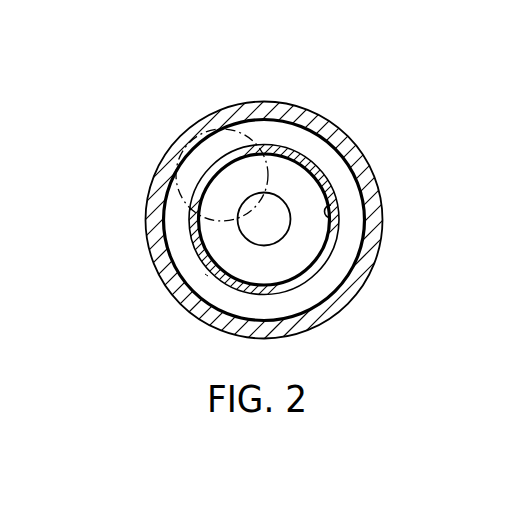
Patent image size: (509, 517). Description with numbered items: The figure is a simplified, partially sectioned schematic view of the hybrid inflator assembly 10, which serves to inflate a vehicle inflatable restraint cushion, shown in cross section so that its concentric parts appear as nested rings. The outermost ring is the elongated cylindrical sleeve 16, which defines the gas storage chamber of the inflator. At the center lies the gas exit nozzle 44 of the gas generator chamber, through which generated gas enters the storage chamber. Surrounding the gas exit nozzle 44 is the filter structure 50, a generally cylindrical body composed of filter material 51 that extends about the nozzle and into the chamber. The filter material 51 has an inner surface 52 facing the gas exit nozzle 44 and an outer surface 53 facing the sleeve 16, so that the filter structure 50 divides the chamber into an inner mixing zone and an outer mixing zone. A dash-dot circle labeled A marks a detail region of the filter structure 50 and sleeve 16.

The hybrid inflator assembly 10 is at (416, 136).
The elongated cylindrical sleeve 16 is at (313, 112).
The gas exit nozzle 44 is at (292, 233).
The filter structure 50 is at (206, 274).
The filter material 51 is at (322, 223).
The inner surface 52 is at (330, 228).
The outer surface 53 is at (320, 176).
The detail region A is at (177, 160).